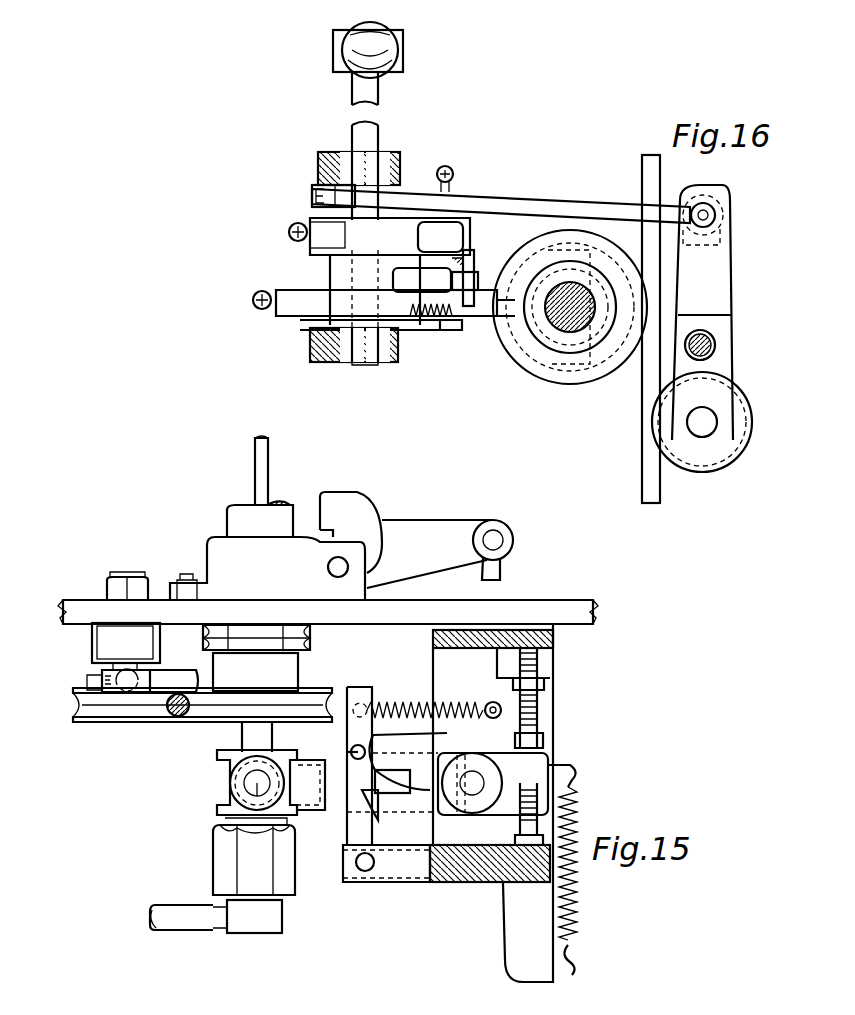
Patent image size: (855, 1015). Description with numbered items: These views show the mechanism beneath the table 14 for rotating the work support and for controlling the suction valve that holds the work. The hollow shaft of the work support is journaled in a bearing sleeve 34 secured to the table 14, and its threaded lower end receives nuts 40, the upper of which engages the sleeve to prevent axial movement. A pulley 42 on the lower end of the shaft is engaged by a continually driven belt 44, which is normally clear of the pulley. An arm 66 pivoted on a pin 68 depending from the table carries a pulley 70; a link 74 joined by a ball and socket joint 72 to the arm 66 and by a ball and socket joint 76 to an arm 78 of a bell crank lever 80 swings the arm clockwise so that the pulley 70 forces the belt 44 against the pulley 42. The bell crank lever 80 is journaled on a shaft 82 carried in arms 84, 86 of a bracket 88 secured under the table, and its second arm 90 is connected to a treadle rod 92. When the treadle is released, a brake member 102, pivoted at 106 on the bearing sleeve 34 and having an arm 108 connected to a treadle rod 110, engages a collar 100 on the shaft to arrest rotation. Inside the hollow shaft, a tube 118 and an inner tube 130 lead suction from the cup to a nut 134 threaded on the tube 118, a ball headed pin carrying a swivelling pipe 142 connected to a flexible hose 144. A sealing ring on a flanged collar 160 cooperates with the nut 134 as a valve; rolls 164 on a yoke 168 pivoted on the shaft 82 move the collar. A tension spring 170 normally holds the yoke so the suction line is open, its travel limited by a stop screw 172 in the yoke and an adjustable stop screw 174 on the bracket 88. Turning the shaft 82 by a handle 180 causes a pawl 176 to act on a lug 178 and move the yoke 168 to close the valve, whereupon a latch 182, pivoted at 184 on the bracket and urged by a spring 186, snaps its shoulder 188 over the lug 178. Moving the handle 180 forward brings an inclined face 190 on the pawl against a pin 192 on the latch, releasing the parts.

In FIG. 15, the table 14 is at (572, 600).
In FIG. 15, the bearing sleeve 34 is at (272, 572).
In FIG. 15, the nuts 40 is at (310, 640).
In FIG. 16, the pulley 42 is at (572, 384).
In FIG. 15, the pulley 42 is at (200, 722).
In FIG. 16, the belt 44 is at (642, 470).
In FIG. 15, the belt 44 is at (170, 716).
In FIG. 16, the arm 66 is at (733, 300).
In FIG. 16, the pin 68 is at (715, 345).
In FIG. 15, the pin 68 is at (128, 575).
In FIG. 16, the pulley 70 is at (735, 455).
In FIG. 15, the pulley 70 is at (90, 722).
In FIG. 16, the ball and socket joint 72 is at (705, 195).
In FIG. 15, the ball and socket joint 72 is at (120, 692).
In FIG. 16, the link 74 is at (612, 185).
In FIG. 15, the link 74 is at (185, 660).
In FIG. 16, the ball and socket joint 76 is at (312, 196).
In FIG. 16, the arm 78 is at (312, 248).
In FIG. 16, the bell crank lever 80 is at (385, 240).
In FIG. 16, the shaft 82 is at (380, 135).
In FIG. 15, the shaft 82 is at (484, 780).
In FIG. 16, the arm 84 is at (330, 152).
In FIG. 16, the arm 86 is at (398, 330).
In FIG. 15, the bracket 88 is at (470, 882).
In FIG. 16, the second arm 90 is at (452, 180).
In FIG. 16, the treadle rod 92 is at (440, 236).
In FIG. 15, the collar 100 is at (227, 515).
In FIG. 15, the brake member 102 is at (362, 500).
In FIG. 15, the pivot 106 is at (332, 572).
In FIG. 15, the arm 108 is at (470, 505).
In FIG. 15, the treadle rod 110 is at (500, 570).
In FIG. 15, the tube 118 is at (280, 500).
In FIG. 15, the tube 130 is at (268, 462).
In FIG. 15, the nut 134 is at (213, 860).
In FIG. 15, the pipe 142 is at (225, 930).
In FIG. 15, the flexible hose 144 is at (180, 930).
In FIG. 15, the flanged collar 160 is at (230, 805).
In FIG. 15, the rolls 164 is at (235, 783).
In FIG. 16, the yoke 168 is at (462, 325).
In FIG. 15, the yoke 168 is at (325, 805).
In FIG. 16, the tension spring 170 is at (258, 308).
In FIG. 15, the tension spring 170 is at (577, 810).
In FIG. 15, the stop screw 172 is at (515, 840).
In FIG. 15, the adjustable stop screw 174 is at (543, 740).
In FIG. 16, the pawl 176 is at (425, 282).
In FIG. 15, the pawl 176 is at (400, 748).
In FIG. 15, the lug 178 is at (455, 815).
In FIG. 16, the handle 180 is at (396, 40).
In FIG. 15, the latch 182 is at (347, 690).
In FIG. 15, the pivot 184 is at (365, 872).
In FIG. 16, the spring 186 is at (432, 316).
In FIG. 15, the spring 186 is at (435, 702).
In FIG. 15, the shoulder 188 is at (395, 793).
In FIG. 15, the inclined face 190 is at (365, 752).
In FIG. 16, the pin 192 is at (474, 262).
In FIG. 15, the pin 192 is at (340, 750).